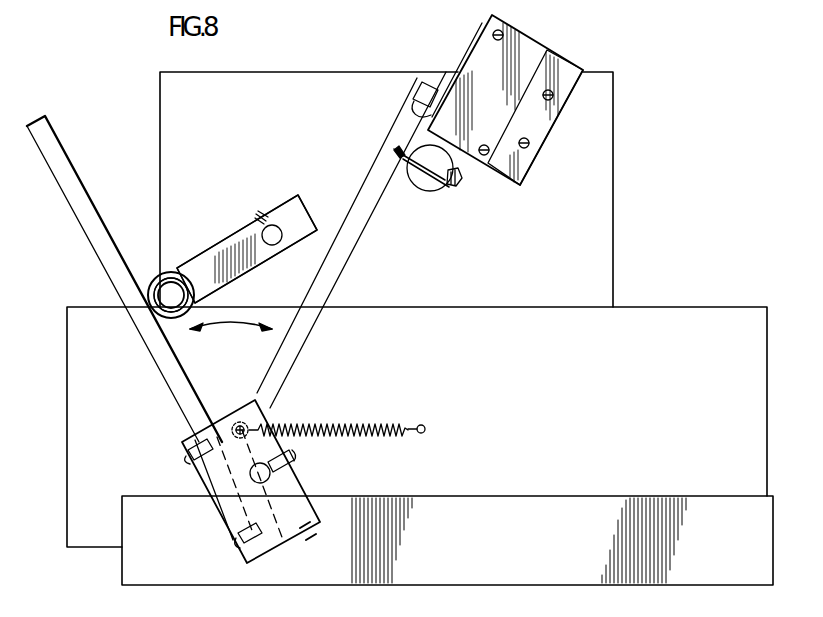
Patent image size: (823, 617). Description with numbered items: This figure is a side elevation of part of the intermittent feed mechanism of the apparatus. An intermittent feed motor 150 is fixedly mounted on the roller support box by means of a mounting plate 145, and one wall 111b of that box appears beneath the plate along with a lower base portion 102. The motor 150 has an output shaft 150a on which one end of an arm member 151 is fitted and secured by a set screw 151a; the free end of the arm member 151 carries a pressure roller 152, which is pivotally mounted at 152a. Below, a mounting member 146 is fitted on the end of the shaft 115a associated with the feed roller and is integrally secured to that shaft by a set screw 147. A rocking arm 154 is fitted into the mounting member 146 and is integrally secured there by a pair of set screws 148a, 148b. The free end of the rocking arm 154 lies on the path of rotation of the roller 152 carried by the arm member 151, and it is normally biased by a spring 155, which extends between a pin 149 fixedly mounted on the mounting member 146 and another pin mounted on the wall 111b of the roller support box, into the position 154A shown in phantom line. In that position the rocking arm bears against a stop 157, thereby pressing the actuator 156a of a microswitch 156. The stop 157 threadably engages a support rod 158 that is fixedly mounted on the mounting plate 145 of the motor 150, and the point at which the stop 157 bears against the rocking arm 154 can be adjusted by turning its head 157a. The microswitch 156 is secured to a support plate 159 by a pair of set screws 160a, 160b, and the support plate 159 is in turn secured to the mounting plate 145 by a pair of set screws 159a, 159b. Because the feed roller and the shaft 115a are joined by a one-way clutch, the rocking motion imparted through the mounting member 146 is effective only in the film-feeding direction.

The base support 102 is at (712, 494).
The wall of roller support box 111b is at (738, 305).
The shaft 115a is at (272, 475).
The mounting plate 145 is at (608, 248).
The mounting member 146 is at (312, 530).
The set screw 147 is at (296, 458).
The set screw 148a is at (186, 462).
The set screw 148b is at (240, 545).
The pin 149 is at (236, 415).
The intermittent feed motor 150 is at (425, 429).
The output shaft 150a is at (247, 249).
The arm member 151 is at (246, 226).
The set screw 151a is at (262, 212).
The pressure roller 152 is at (150, 272).
The pivot 152a is at (176, 278).
The rocking arm 154 is at (165, 363).
The position of rocking arm 154A is at (368, 228).
The spring 155 is at (356, 420).
The microswitch 156 is at (462, 72).
The actuator 156a is at (418, 88).
The stop 157 is at (394, 152).
The head 157a is at (470, 202).
The support rod 158 is at (410, 185).
The support plate 159 is at (552, 48).
The set screw 159a is at (553, 100).
The set screw 159b is at (528, 148).
The set screw 160a is at (505, 38).
The set screw 160b is at (486, 156).